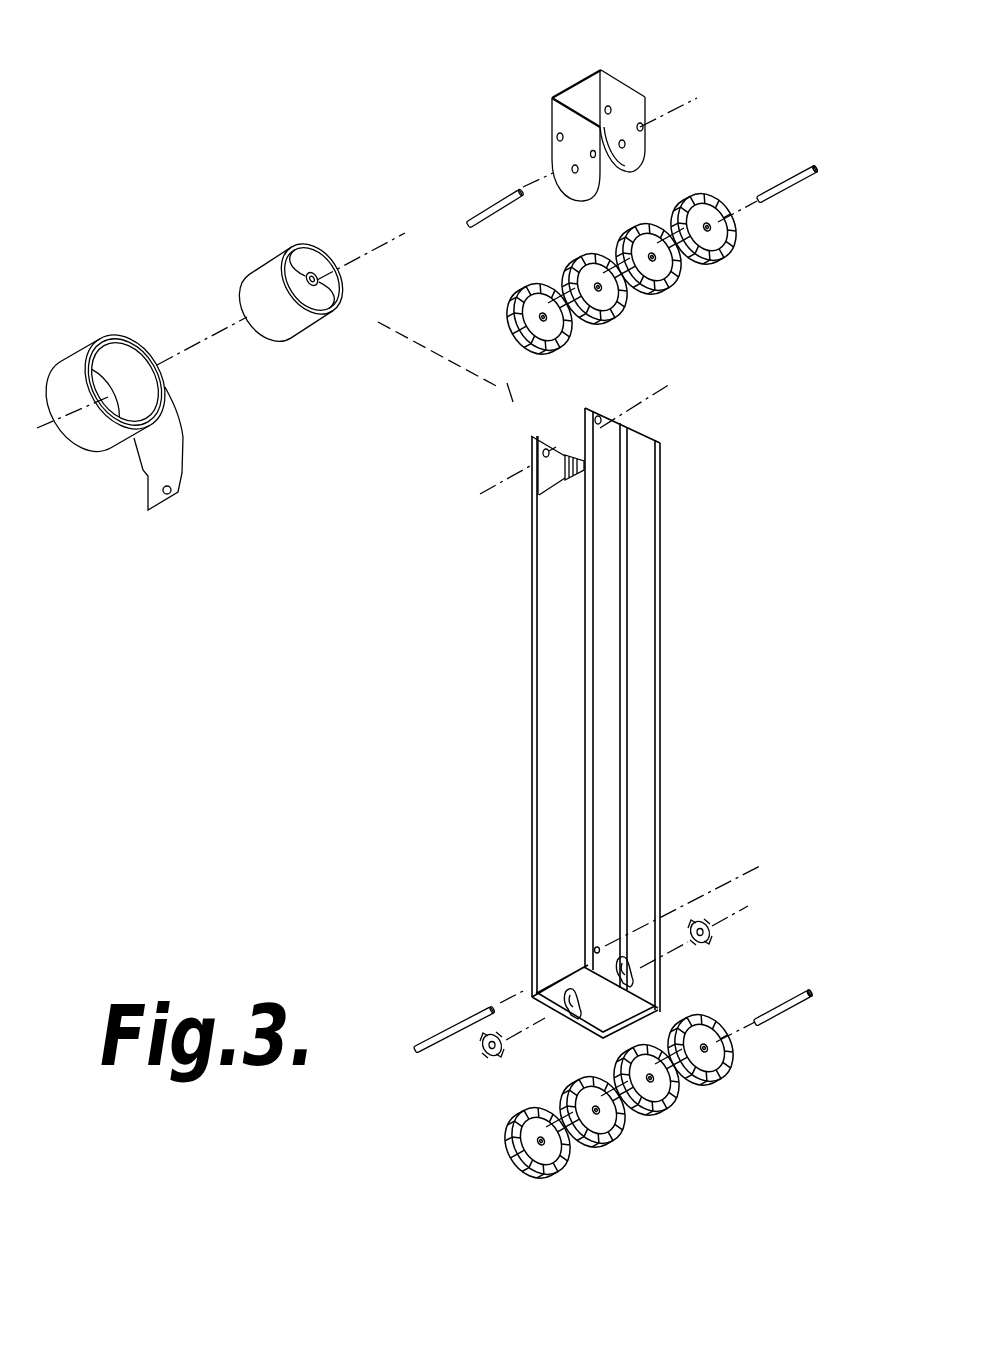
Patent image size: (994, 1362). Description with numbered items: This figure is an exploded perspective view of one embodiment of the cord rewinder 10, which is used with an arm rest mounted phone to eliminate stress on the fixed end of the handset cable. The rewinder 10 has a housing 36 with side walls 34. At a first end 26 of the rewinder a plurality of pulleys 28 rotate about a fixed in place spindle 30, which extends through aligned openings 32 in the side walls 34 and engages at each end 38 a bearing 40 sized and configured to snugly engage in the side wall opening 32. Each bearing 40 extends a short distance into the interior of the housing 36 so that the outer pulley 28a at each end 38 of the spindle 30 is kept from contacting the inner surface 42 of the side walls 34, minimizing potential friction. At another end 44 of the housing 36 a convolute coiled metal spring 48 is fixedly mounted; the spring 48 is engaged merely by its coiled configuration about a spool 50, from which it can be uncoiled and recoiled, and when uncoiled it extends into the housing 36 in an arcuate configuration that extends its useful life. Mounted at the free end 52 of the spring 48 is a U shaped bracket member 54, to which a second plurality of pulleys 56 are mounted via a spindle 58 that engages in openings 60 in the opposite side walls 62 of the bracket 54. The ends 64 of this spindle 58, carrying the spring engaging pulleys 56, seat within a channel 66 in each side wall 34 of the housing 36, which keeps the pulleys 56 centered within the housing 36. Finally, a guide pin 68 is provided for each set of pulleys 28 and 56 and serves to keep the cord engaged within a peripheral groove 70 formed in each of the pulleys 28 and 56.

The cord rewinder 10 is at (436, 116).
The first end 26 is at (655, 992).
The pulleys 28 is at (553, 1172).
The outer pulley 28a is at (712, 1090).
The spindle 30 is at (778, 1020).
The openings 32 is at (568, 1012).
The side walls 34 is at (636, 1002).
The housing 36 is at (618, 698).
The end 38 is at (804, 992).
The bearing 40 is at (708, 930).
The inner surface 42 is at (512, 397).
The another end 44 is at (529, 484).
The convolute coiled metal spring 48 is at (163, 438).
The spool 50 is at (315, 250).
The free end 52 is at (178, 490).
The bracket member 54 is at (598, 100).
The second plurality of pulleys 56 is at (724, 257).
The spindle 58 is at (786, 180).
The openings 60 is at (624, 146).
The side walls 62 is at (557, 150).
The ends 64 is at (812, 180).
The channel 66 is at (565, 454).
The guide pin 68 is at (433, 1035).
The peripheral groove 70 is at (603, 1142).